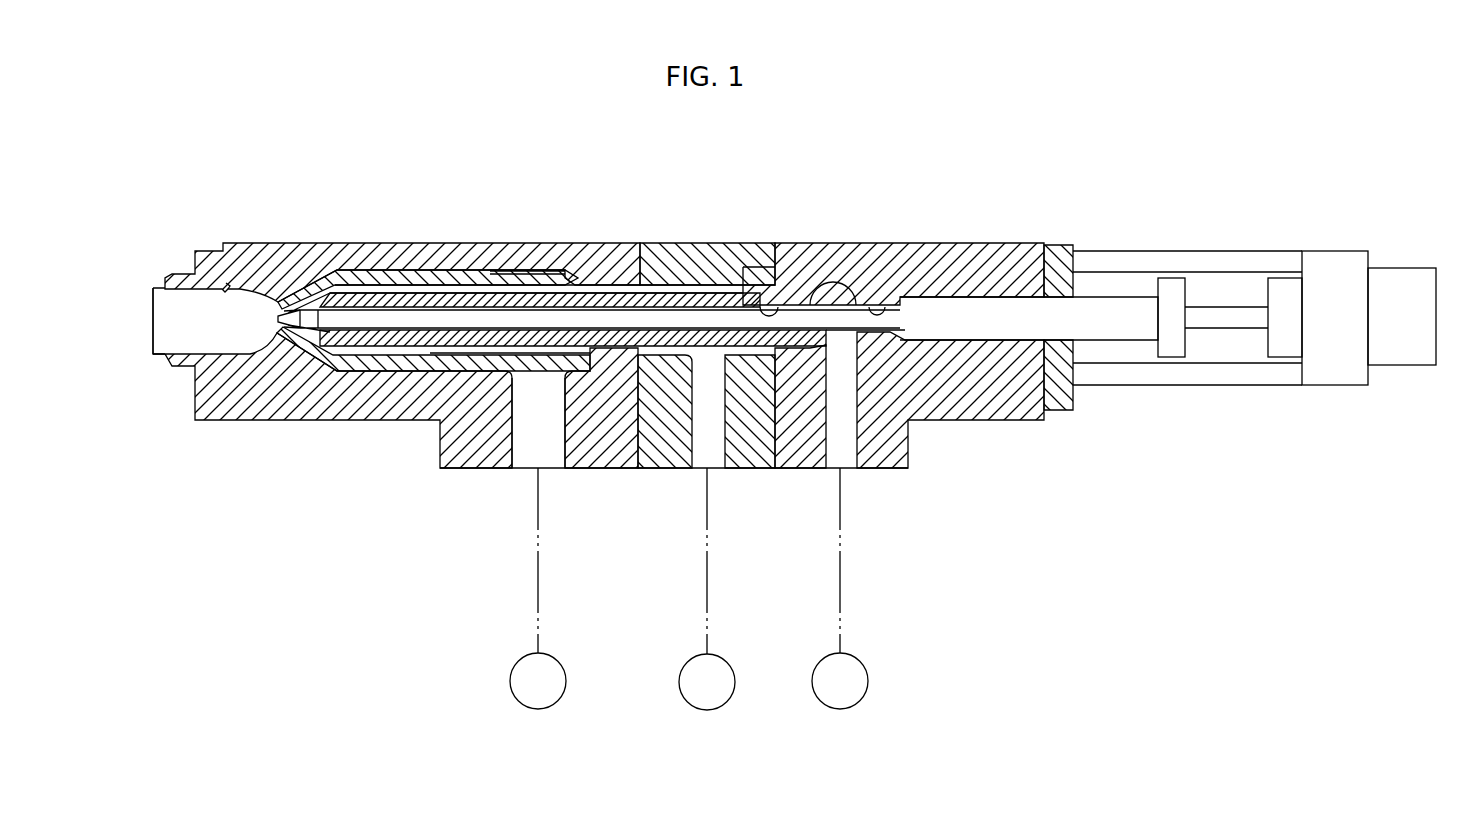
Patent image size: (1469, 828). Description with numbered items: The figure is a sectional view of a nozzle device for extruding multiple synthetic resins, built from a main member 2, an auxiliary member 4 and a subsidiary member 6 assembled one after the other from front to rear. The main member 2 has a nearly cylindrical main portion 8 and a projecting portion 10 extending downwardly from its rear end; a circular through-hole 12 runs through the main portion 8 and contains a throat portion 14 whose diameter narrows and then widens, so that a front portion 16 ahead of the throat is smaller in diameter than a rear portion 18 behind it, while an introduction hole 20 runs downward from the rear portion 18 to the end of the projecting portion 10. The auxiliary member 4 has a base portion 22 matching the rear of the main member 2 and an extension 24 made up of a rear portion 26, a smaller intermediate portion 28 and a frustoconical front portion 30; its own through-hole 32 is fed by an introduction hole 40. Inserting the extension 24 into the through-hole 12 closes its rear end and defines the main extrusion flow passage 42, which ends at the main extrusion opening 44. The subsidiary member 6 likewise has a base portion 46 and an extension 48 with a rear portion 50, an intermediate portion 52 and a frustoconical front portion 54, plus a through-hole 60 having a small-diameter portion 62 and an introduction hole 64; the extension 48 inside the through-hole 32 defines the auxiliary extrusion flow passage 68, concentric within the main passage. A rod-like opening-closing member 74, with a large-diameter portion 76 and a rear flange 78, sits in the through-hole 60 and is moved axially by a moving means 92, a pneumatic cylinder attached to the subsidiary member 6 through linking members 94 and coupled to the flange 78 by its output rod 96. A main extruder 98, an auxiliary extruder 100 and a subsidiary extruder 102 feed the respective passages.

The main member 2 is at (478, 224).
The auxiliary member 4 is at (736, 216).
The subsidiary member 6 is at (948, 234).
The main portion 8 is at (340, 243).
The projecting portion 10 is at (440, 456).
The through-hole 12 is at (388, 356).
The throat portion 14 is at (245, 355).
The front portion 16 is at (228, 289).
The rear portion 18 is at (527, 270).
The introduction hole 20 is at (510, 432).
The base portion 22 is at (667, 456).
The extension 24 is at (428, 278).
The rear portion 26 is at (597, 285).
The intermediate portion 28 is at (488, 271).
The front portion 30 is at (301, 300).
The through-hole 32 is at (357, 368).
The introduction hole 40 is at (693, 452).
The main extrusion flow passage 42 is at (194, 334).
The main extrusion opening 44 is at (148, 322).
The base portion 46 is at (895, 470).
The extension 48 is at (667, 292).
The rear portion 50 is at (748, 285).
The intermediate portion 52 is at (617, 292).
The front portion 54 is at (386, 268).
The through-hole 60 is at (790, 305).
The small-diameter portion 62 is at (890, 303).
The introduction hole 64 is at (828, 440).
The auxiliary extrusion flow passage 68 is at (583, 350).
The opening-closing member 74 is at (620, 333).
The large-diameter portion 76 is at (1005, 303).
The flange 78 is at (1170, 285).
The moving means 92 is at (1393, 368).
The linking members 94 is at (1240, 252).
The output rod 96 is at (1238, 330).
The main extruder 98 is at (538, 588).
The auxiliary extruder 100 is at (707, 589).
The subsidiary extruder 102 is at (840, 588).